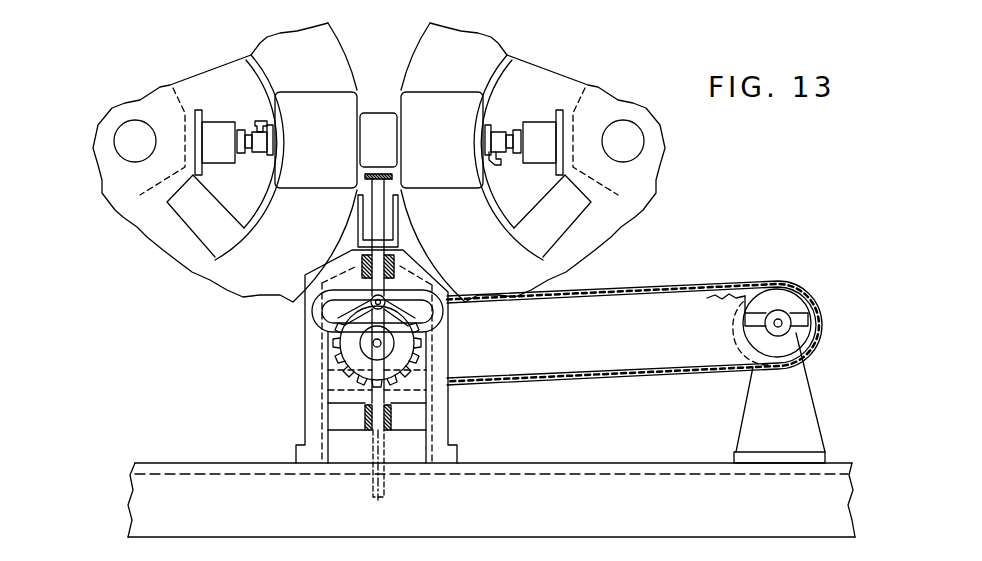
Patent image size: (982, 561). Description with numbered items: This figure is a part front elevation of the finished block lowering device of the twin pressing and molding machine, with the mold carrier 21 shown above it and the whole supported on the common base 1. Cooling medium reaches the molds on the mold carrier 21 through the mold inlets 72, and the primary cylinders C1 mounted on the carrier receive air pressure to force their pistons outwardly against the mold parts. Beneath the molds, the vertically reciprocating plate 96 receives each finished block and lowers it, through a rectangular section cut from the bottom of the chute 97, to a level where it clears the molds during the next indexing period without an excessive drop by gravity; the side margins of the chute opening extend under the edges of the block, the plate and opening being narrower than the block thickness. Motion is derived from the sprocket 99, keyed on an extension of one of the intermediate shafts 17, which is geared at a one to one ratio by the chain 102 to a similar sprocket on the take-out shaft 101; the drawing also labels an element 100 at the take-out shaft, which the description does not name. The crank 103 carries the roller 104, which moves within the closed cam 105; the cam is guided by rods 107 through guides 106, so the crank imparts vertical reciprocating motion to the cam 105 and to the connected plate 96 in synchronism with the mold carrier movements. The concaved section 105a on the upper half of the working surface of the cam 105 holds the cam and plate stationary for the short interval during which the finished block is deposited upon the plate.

The common base 1 is at (843, 497).
The intermediate shaft 17 is at (808, 333).
The mold carrier 21 is at (468, 52).
The mold inlet 72 is at (262, 124).
The vertically reciprocating plate 96 is at (392, 177).
The chute 97 is at (361, 227).
The sprocket 99 is at (795, 302).
The gear 100 is at (403, 350).
The take-out shaft 101 is at (381, 341).
The chain 102 is at (566, 294).
The crank 103 is at (355, 353).
The roller 104 is at (347, 325).
The closed cam 105 is at (340, 331).
The concaved section 105a is at (385, 297).
The guide 106 is at (392, 262).
The rod 107 is at (380, 402).
The primary cylinder C1 is at (215, 156).